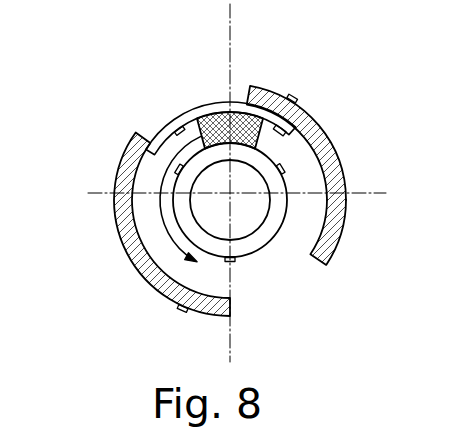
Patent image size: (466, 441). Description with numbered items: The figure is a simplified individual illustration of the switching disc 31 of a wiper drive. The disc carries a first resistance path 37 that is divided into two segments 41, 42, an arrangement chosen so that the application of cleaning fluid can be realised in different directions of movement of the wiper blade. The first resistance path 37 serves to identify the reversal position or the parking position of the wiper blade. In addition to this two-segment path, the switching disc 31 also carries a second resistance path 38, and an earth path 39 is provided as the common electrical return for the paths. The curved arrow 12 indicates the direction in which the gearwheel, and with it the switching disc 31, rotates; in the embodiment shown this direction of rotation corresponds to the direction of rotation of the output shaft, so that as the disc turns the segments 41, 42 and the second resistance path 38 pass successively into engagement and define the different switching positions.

The switching disc 31 is at (177, 69).
The first resistance path 37 is at (215, 106).
The earth path 39 is at (198, 163).
The segment of the first resistance path 41 is at (341, 135).
The second resistance path 38 is at (352, 244).
The segment of the first resistance path 42 is at (105, 232).
The arrow 12 is at (167, 230).